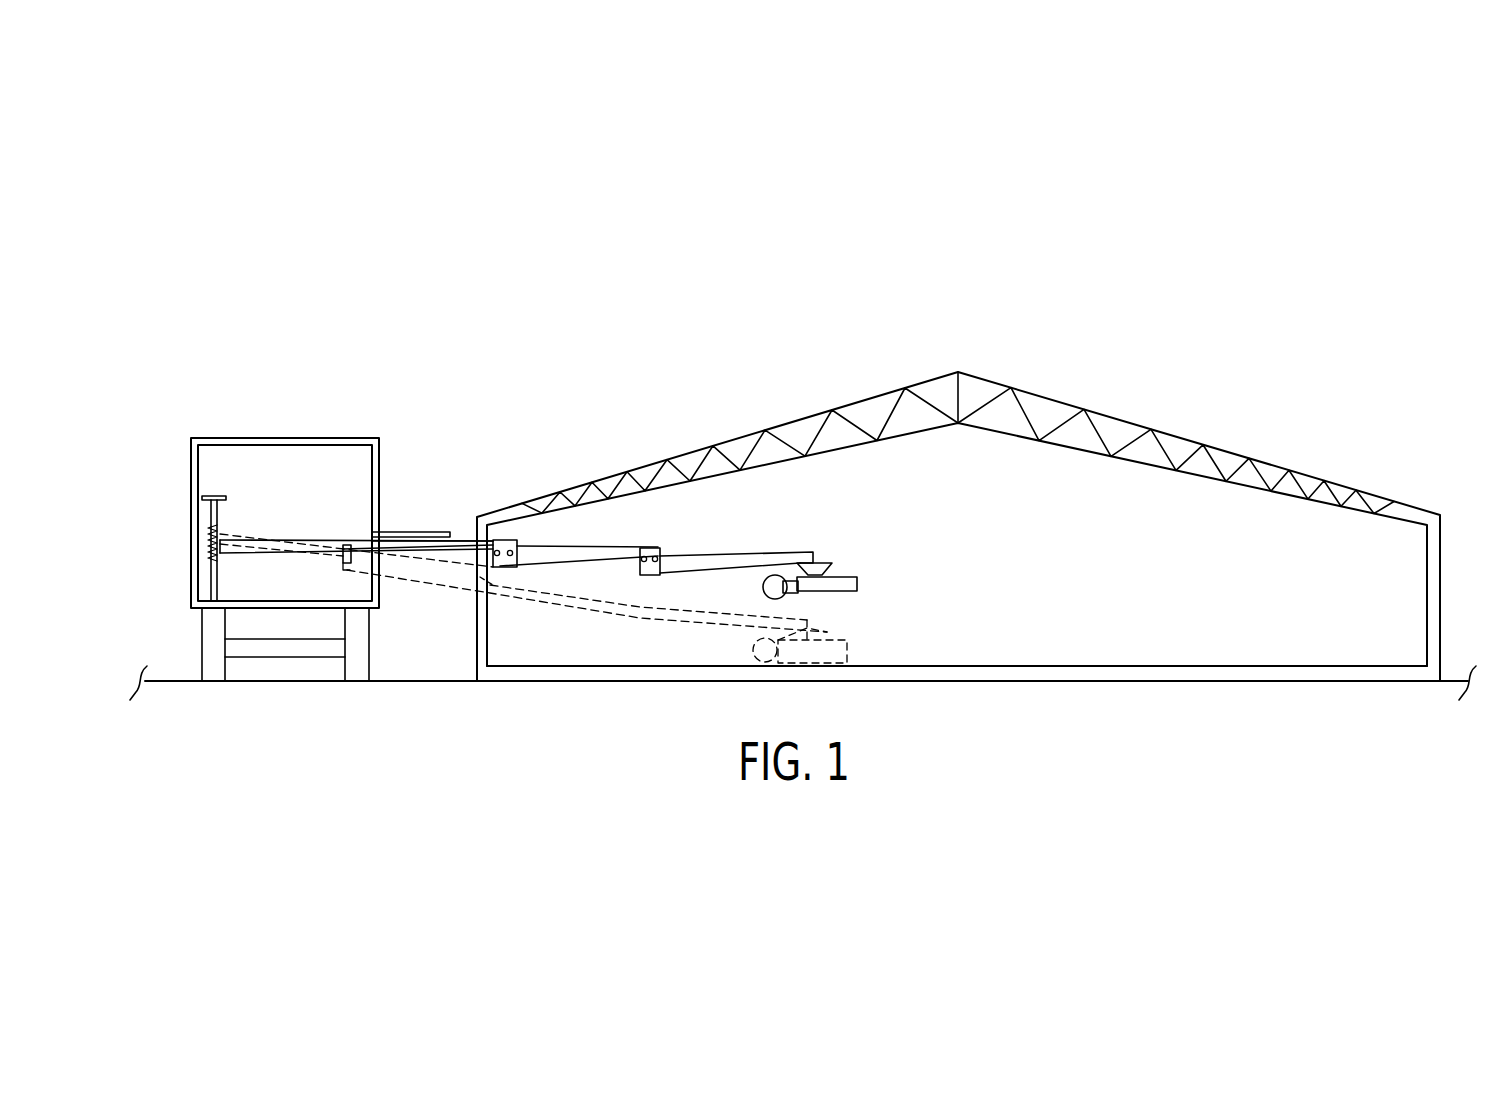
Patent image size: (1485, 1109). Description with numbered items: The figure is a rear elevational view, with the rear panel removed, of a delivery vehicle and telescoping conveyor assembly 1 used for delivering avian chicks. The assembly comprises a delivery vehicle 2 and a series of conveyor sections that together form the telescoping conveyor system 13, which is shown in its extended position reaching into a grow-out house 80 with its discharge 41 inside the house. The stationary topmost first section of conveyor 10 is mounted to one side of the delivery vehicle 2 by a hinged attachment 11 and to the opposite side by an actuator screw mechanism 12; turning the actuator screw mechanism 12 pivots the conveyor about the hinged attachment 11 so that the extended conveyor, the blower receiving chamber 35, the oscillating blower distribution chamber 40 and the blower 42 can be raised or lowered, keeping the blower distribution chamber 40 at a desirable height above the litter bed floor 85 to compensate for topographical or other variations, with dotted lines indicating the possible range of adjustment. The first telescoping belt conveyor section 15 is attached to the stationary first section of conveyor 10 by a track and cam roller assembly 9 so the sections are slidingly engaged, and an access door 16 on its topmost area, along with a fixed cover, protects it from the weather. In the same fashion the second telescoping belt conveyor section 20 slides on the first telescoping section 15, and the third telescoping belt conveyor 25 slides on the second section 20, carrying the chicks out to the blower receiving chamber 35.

The delivery vehicle and telescoping conveyor assembly 1 is at (196, 438).
The delivery vehicle 2 is at (257, 438).
The track and cam roller assembly 9 is at (347, 568).
The first section of conveyor 10 is at (250, 533).
The hinged attachment 11 is at (370, 540).
The actuator screw mechanism 12 is at (210, 512).
The telescoping conveyor system 13 is at (457, 557).
The first telescoping belt conveyor section 15 is at (403, 542).
The access door 16 is at (390, 531).
The second telescoping belt conveyor section 20 is at (558, 545).
The third telescoping belt conveyor 25 is at (740, 553).
The blower receiving chamber 35 is at (820, 562).
The oscillating blower distribution chamber 40 is at (845, 572).
The discharge 41 is at (858, 585).
The blower 42 is at (763, 580).
The grow-out house 80 is at (1115, 418).
The litter bed floor 85 is at (1065, 667).